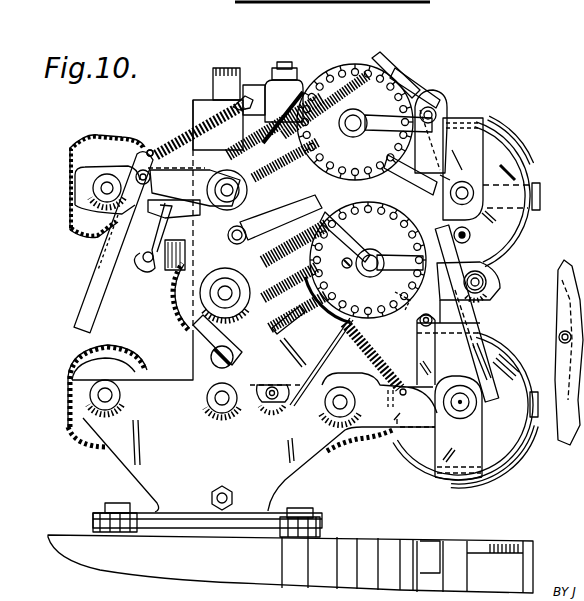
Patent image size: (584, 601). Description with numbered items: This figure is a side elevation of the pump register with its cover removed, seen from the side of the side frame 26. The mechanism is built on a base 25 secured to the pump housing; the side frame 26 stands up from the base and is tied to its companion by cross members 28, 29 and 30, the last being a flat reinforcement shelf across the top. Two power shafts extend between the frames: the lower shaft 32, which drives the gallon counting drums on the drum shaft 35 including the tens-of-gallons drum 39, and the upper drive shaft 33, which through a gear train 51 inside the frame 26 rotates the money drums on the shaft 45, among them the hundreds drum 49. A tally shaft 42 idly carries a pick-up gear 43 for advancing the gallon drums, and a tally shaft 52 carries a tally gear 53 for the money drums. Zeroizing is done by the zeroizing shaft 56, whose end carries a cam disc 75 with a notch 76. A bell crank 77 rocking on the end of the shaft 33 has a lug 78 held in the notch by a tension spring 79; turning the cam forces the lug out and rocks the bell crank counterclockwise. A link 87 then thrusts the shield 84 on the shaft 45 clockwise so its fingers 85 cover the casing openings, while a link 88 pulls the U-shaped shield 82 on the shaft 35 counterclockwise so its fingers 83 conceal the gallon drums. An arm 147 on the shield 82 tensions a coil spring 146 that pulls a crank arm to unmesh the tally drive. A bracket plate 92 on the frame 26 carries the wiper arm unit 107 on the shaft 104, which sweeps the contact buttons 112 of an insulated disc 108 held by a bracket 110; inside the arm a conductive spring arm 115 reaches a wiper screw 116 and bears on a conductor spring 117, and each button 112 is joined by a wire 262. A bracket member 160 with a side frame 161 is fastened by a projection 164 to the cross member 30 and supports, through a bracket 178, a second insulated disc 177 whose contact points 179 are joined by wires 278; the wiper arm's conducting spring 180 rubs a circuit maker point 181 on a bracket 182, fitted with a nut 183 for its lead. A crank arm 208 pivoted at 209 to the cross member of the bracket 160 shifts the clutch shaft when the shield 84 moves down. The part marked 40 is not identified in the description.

The base 25 is at (360, 546).
The side frame 26 is at (288, 472).
The cross member 28 is at (222, 486).
The cross member 29 is at (482, 284).
The cross member 30 is at (196, 100).
The lower shaft 32 is at (213, 403).
The upper drive shaft 33 is at (208, 188).
The drum shaft 35 is at (461, 408).
The drum 39 is at (498, 350).
The gear 40 is at (85, 445).
The tally shaft 42 is at (470, 326).
The pick-up gear 43 is at (435, 357).
The shaft 45 is at (466, 189).
The hundreds drum 49 is at (522, 222).
The gear train 51 is at (108, 147).
The tally shaft 52 is at (437, 113).
The tally gear 53 is at (432, 92).
The zeroizing shaft 56 is at (195, 294).
The cam disc 75 is at (190, 333).
The notch 76 is at (236, 268).
The bell crank 77 is at (236, 112).
The lug 78 is at (205, 244).
The tension spring 79 is at (185, 128).
The shield 82 is at (465, 468).
The fingers 83 is at (515, 460).
The shield 84 is at (468, 123).
The fingers 85 is at (532, 163).
The link 87 is at (306, 210).
The link 88 is at (477, 316).
The bracket plate 92 is at (297, 401).
The shaft 104 is at (356, 270).
The wiper arm unit 107 is at (387, 283).
The insulated disc 108 is at (321, 362).
The bracket 110 is at (470, 250).
The contact buttons 112 is at (378, 224).
The spring arm 115 is at (400, 290).
The wiper screw 116 is at (488, 292).
The conductor spring 117 is at (373, 259).
The coil spring 146 is at (363, 388).
The arm 147 is at (397, 417).
The bracket member 160 is at (266, 90).
The side frame 161 is at (298, 78).
The projection 164 is at (216, 78).
The insulated disc 177 is at (364, 58).
The bracket 178 is at (407, 78).
The contact points 179 is at (357, 62).
The conducting spring 180 is at (454, 164).
The circuit maker point 181 is at (440, 104).
The bracket 182 is at (370, 110).
The nut 183 is at (284, 101).
The crank arm 208 is at (298, 68).
The pivot 209 is at (281, 62).
The wire 262 is at (320, 328).
The wire 278 is at (328, 60).